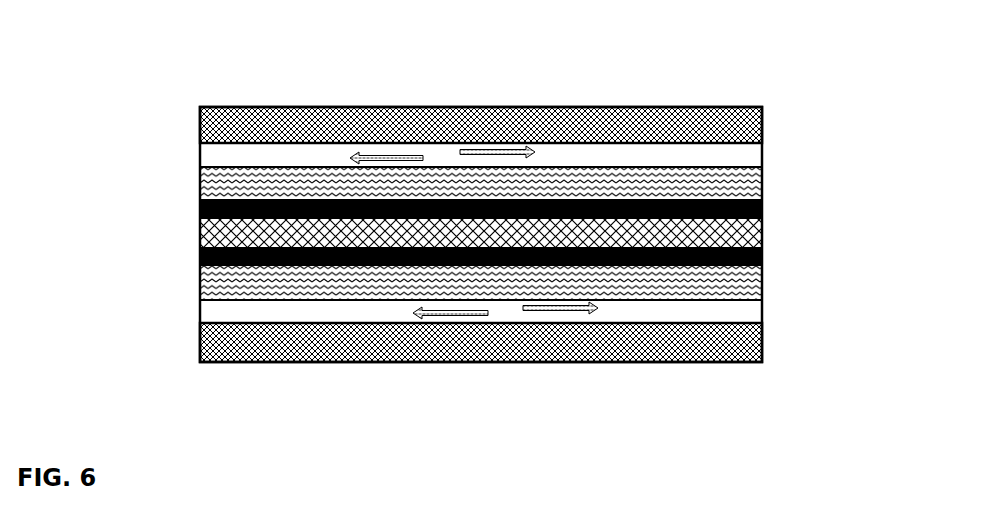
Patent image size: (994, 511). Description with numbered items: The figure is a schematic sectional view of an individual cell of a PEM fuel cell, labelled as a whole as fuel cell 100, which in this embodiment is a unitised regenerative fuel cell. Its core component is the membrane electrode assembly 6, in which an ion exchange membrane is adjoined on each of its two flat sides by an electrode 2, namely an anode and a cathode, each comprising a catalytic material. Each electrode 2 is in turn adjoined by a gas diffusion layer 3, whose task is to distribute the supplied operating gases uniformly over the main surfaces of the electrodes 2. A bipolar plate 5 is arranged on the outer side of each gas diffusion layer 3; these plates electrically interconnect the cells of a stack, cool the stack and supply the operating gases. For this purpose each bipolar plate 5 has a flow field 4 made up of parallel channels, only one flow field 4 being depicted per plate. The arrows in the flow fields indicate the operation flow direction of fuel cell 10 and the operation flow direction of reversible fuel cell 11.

The fuel cell 100 is at (800, 42).
The bipolar plate 5 is at (200, 117).
The flow field 4 is at (738, 313).
The operation flow direction of fuel cell 10 is at (372, 148).
The operation flow direction of reversible fuel cell 11 is at (483, 150).
The membrane electrode assembly 6 is at (225, 232).
The gas diffusion layer 3 is at (200, 181).
The electrode 2 is at (762, 213).